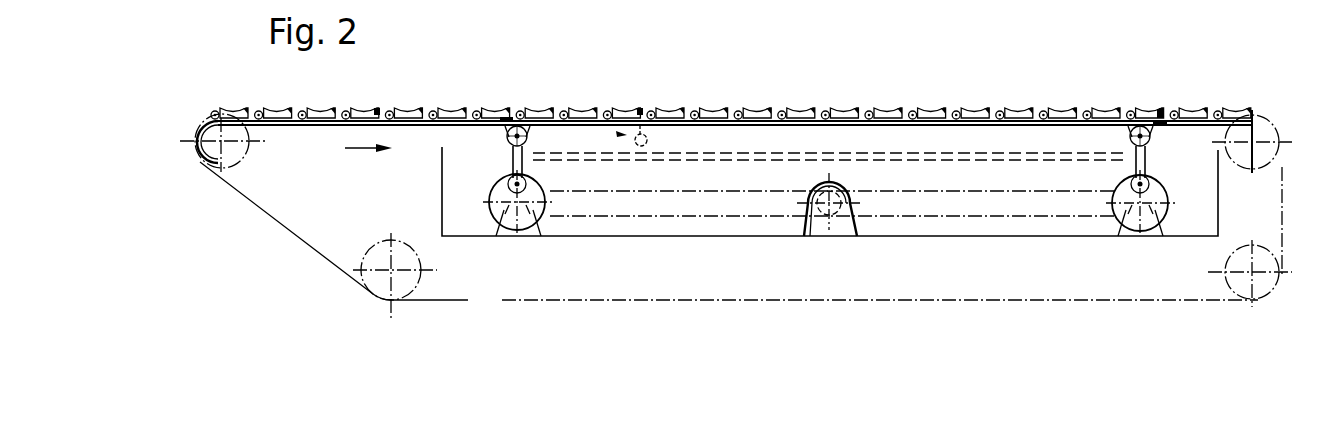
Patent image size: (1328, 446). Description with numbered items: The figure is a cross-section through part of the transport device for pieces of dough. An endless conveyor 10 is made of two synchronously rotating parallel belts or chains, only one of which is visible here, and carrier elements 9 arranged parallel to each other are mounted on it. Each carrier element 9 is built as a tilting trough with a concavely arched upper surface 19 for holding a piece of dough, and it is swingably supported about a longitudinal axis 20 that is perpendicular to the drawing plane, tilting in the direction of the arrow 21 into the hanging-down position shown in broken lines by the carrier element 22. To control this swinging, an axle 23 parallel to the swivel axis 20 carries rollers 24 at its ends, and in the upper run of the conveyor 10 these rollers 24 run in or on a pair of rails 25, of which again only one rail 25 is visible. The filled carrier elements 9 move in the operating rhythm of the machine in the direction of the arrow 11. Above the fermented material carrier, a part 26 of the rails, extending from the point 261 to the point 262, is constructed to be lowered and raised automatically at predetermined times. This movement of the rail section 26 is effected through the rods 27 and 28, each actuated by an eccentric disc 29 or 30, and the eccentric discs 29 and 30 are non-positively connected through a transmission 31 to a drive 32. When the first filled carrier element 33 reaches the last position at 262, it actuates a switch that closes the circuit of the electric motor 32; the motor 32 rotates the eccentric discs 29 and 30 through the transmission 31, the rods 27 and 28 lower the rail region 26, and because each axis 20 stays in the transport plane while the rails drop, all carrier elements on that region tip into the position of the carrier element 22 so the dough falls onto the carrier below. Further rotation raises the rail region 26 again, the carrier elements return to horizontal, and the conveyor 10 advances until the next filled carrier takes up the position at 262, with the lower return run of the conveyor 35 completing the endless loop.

The carrier element 9 is at (731, 94).
The endless conveyor 10 is at (273, 218).
The arrow 11 is at (362, 148).
The upper surface 19 is at (362, 110).
The longitudinal axis 20 is at (376, 110).
The arrow 21 is at (617, 134).
The carrier element 22 is at (647, 133).
The axle 23 is at (622, 134).
The rollers 24 is at (657, 112).
The rail 25 is at (313, 127).
The rail section 26 is at (813, 122).
The start of rail section 261 is at (513, 117).
The end of rail section 262 is at (1162, 112).
The rod 27 is at (512, 152).
The rod 28 is at (1148, 150).
The eccentric disc 29 is at (502, 212).
The eccentric disc 30 is at (1162, 212).
The transmission 31 is at (1005, 216).
The drive 32 is at (823, 227).
The carrier element 33 is at (1146, 114).
The lower chain run 35 is at (646, 272).